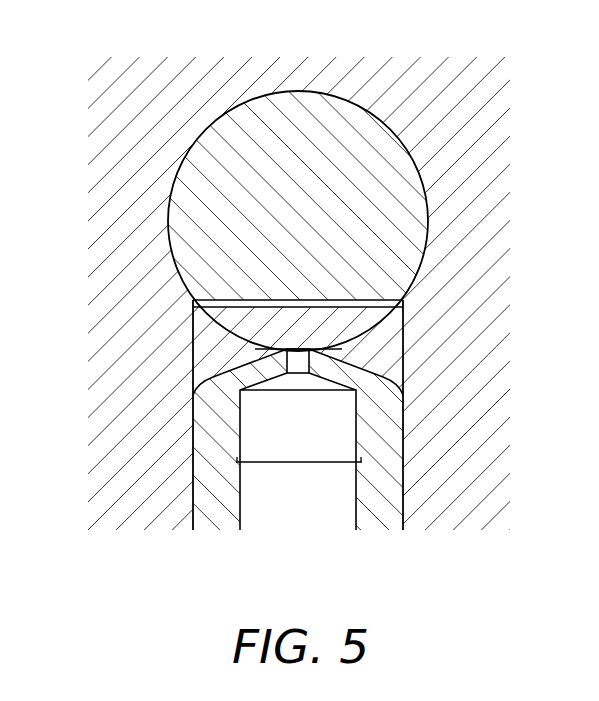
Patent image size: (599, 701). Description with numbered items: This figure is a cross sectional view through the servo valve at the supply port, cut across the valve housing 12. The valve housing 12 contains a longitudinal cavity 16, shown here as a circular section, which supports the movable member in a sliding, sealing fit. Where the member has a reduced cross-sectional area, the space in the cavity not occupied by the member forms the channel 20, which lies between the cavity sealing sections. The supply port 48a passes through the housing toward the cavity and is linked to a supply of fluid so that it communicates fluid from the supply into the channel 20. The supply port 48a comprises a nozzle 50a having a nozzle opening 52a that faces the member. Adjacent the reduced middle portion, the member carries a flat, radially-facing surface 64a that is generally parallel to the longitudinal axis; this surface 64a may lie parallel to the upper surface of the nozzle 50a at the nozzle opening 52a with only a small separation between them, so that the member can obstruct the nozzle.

The valve housing 12 is at (491, 171).
The longitudinal cavity 16 is at (303, 104).
The channel 20 is at (370, 320).
The supply port 48a is at (380, 527).
The nozzle 50a is at (207, 423).
The nozzle opening 52a is at (298, 368).
The flat radially-facing surface 64a is at (287, 350).